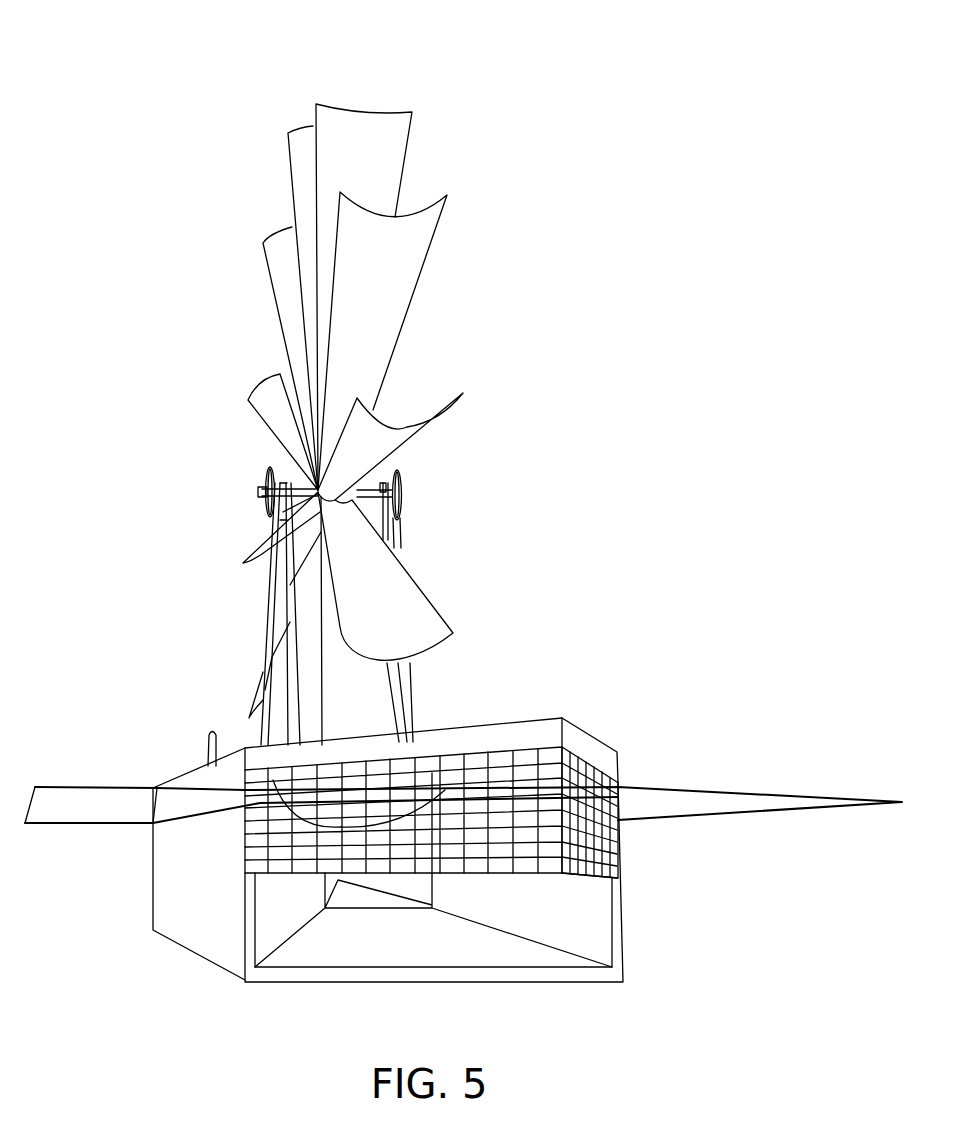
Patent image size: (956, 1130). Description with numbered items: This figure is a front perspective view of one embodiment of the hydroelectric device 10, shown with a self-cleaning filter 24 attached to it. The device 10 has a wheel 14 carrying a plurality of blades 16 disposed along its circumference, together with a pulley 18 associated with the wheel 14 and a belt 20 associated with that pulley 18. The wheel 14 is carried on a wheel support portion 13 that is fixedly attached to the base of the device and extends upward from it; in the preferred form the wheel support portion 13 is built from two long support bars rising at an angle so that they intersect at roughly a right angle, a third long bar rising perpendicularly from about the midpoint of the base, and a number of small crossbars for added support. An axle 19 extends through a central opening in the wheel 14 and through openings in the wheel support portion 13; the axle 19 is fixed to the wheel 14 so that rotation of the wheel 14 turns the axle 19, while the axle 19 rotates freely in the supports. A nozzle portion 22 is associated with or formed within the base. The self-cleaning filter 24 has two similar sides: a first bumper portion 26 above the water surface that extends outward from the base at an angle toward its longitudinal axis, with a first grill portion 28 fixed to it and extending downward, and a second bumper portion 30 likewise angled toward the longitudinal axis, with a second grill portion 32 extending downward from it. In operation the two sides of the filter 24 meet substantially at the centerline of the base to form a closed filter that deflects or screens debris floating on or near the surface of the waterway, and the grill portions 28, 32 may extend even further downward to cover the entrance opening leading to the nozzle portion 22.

The hydroelectric device 10 is at (606, 287).
The wheel support portion 13 is at (270, 671).
The wheel 14 is at (361, 88).
The blades 16 is at (403, 138).
The pulley 18 is at (265, 481).
The axle 19 is at (387, 497).
The belt 20 is at (400, 538).
The nozzle portion 22 is at (280, 907).
The self-cleaning filter 24 is at (610, 722).
The first bumper portion 26 is at (530, 727).
The first grill portion 28 is at (250, 842).
The second bumper portion 30 is at (615, 768).
The second grill portion 32 is at (618, 872).